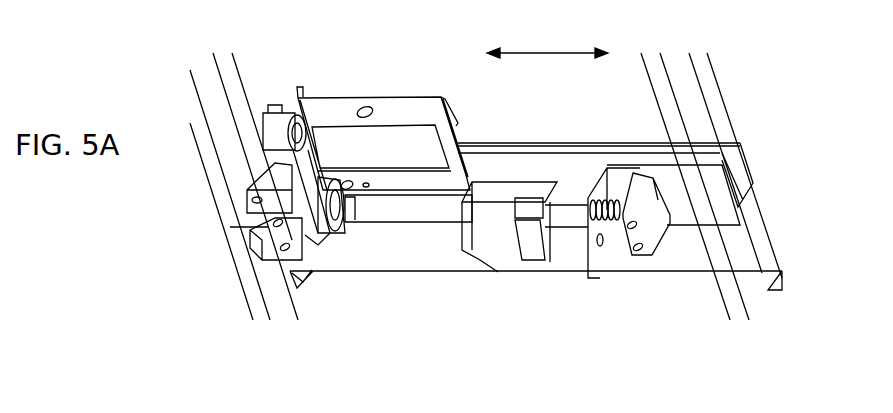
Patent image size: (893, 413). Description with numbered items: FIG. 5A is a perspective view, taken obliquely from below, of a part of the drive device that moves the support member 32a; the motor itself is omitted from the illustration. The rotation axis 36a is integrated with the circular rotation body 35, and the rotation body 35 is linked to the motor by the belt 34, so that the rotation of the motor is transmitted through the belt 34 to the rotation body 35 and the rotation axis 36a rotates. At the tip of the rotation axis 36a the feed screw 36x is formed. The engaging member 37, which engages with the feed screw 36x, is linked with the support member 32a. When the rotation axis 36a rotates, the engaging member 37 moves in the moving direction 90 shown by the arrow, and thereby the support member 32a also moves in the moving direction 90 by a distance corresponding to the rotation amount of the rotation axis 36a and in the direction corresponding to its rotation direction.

The moving direction 90 is at (545, 52).
The support member 32a is at (497, 165).
The belt 34 is at (292, 152).
The rotation body 35 is at (320, 228).
The rotation axis 36a is at (387, 207).
The engaging member 37 is at (537, 237).
The feed screw 36x is at (612, 212).